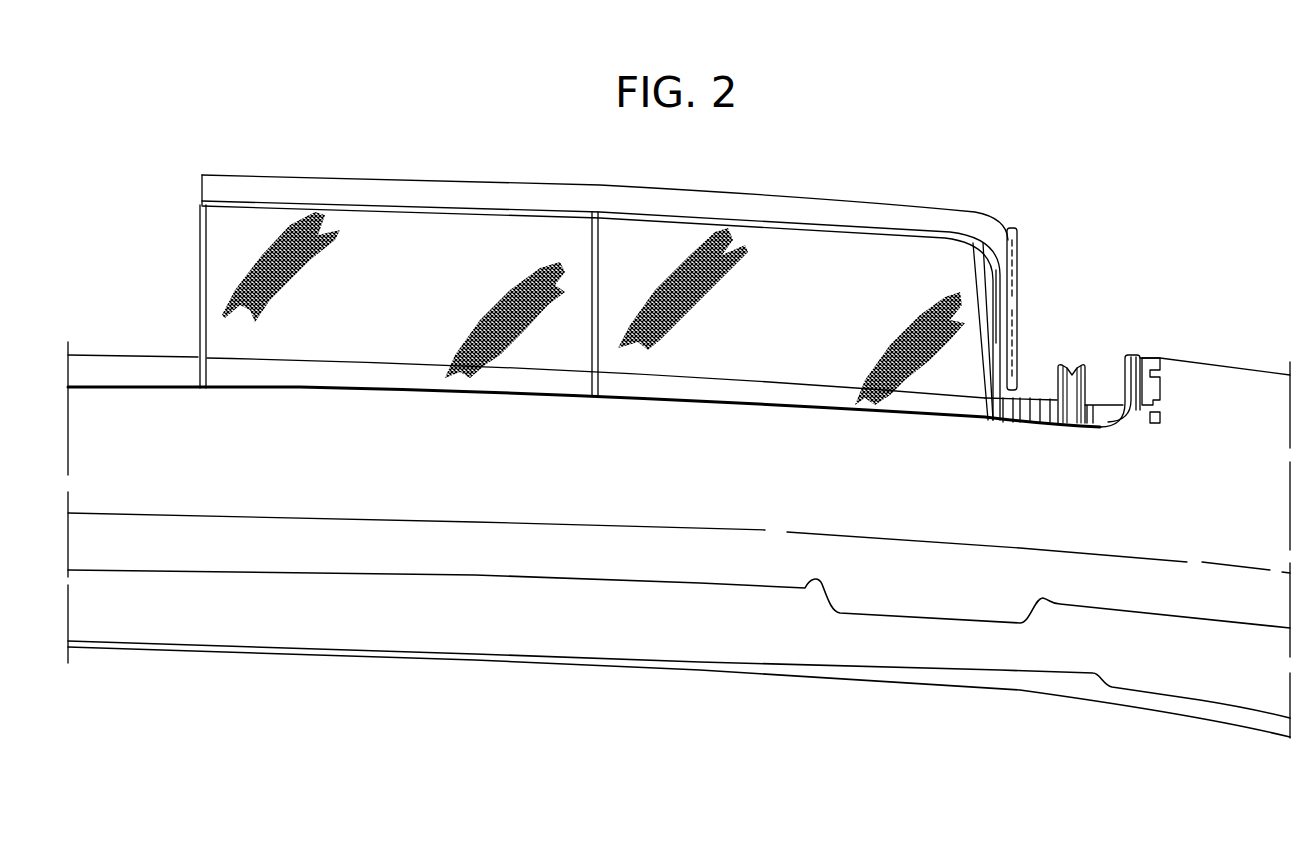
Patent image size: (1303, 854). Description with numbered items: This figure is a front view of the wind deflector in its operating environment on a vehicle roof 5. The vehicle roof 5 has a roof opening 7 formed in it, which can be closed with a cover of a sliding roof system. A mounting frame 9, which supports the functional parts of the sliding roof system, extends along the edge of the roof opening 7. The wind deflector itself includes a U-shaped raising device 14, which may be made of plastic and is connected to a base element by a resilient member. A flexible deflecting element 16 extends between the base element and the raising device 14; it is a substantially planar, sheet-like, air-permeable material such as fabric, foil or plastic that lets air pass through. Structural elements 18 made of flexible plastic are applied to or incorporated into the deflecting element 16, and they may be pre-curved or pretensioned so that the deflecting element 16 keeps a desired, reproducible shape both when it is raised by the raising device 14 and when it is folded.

The vehicle roof 5 is at (1225, 387).
The roof opening 7 is at (1118, 362).
The mounting frame 9 is at (1066, 368).
The raising device 14 is at (885, 220).
The deflecting element 16 is at (776, 242).
The structural elements 18 is at (603, 237).